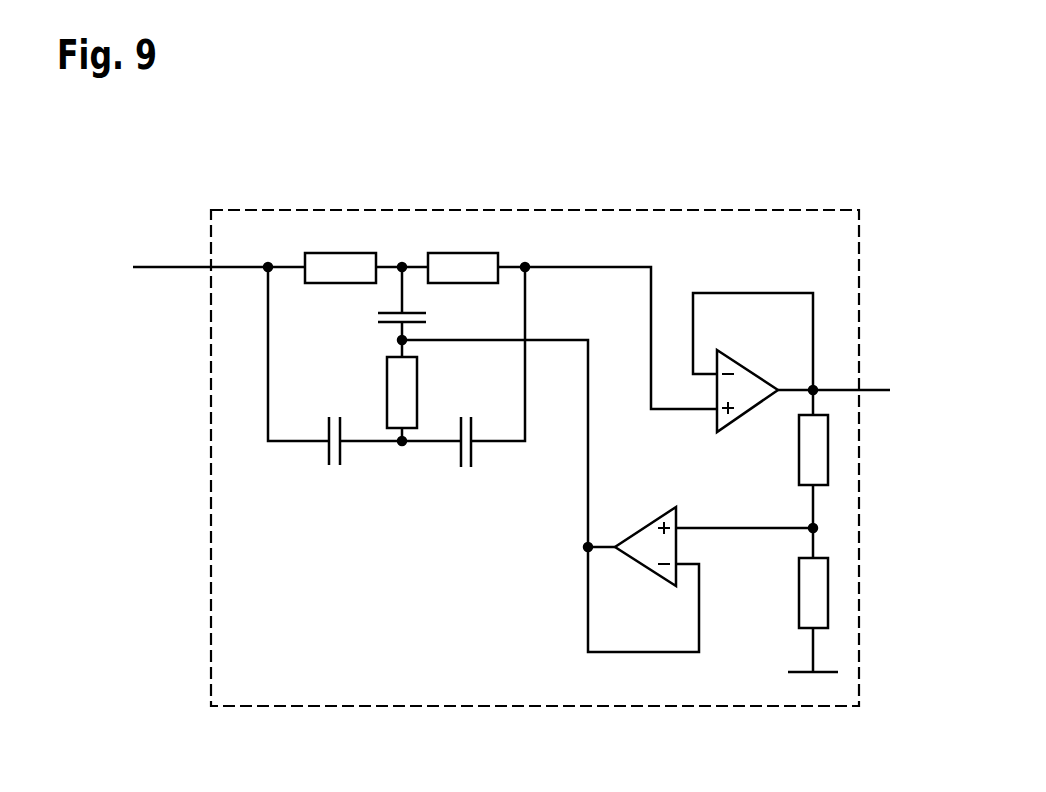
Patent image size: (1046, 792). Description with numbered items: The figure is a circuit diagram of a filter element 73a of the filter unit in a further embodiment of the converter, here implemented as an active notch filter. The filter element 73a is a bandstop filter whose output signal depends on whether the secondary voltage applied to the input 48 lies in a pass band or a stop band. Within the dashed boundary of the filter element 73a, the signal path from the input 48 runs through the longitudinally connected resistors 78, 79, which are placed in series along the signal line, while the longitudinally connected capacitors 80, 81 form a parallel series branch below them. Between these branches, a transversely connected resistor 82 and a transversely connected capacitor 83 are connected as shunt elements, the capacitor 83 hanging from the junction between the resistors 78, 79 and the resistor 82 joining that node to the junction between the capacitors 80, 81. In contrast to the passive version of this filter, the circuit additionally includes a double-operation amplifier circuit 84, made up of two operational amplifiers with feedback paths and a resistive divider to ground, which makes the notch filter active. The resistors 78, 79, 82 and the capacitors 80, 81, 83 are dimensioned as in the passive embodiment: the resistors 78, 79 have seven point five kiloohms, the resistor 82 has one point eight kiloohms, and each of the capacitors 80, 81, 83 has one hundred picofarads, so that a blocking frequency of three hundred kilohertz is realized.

The input 48 is at (132, 357).
The filter element 73a is at (264, 210).
The longitudinally connected resistor 78 is at (338, 253).
The longitudinally connected resistor 79 is at (457, 253).
The longitudinally connected capacitor 80 is at (328, 455).
The longitudinally connected capacitor 81 is at (458, 453).
The transversely connected resistor 82 is at (387, 380).
The transversely connected capacitor 83 is at (390, 323).
The double-operation amplifier circuit 84 is at (778, 262).